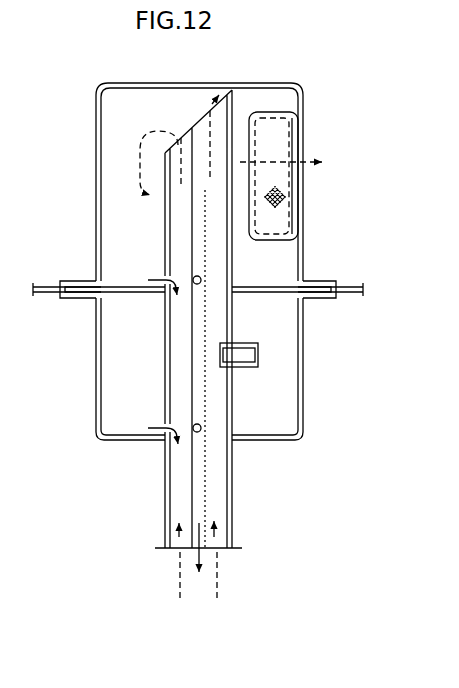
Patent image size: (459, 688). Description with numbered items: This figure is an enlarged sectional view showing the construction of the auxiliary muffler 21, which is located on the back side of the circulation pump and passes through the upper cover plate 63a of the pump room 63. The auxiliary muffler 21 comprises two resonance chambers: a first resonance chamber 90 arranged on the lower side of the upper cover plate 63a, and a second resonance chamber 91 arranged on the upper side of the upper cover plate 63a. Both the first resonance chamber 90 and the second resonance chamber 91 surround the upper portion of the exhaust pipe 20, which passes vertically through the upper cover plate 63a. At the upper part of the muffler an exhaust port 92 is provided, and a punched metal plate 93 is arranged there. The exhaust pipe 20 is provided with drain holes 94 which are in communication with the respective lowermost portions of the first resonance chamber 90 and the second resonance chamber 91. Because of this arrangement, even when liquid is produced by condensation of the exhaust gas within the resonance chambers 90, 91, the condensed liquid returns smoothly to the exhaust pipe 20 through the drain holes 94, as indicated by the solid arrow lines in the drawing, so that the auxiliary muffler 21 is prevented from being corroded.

The exhaust pipe 20 is at (165, 508).
The auxiliary muffler 21 is at (182, 261).
The pump room 63 is at (297, 475).
The upper cover plate 63a is at (347, 284).
The first resonance chamber 90 is at (113, 365).
The second resonance chamber 91 is at (110, 205).
The exhaust port 92 is at (300, 183).
The punched metal plate 93 is at (283, 137).
The drain holes 94 is at (194, 278).